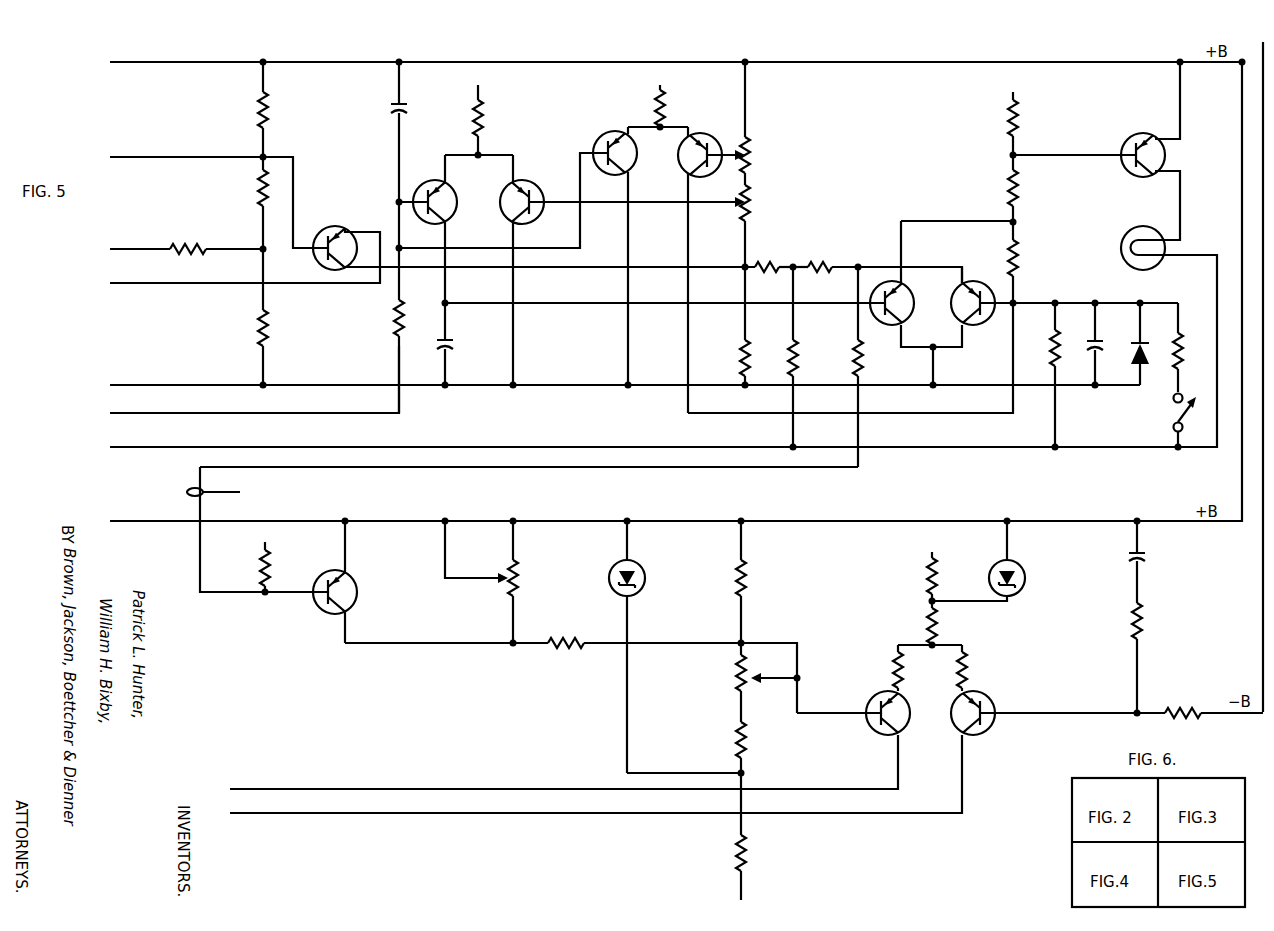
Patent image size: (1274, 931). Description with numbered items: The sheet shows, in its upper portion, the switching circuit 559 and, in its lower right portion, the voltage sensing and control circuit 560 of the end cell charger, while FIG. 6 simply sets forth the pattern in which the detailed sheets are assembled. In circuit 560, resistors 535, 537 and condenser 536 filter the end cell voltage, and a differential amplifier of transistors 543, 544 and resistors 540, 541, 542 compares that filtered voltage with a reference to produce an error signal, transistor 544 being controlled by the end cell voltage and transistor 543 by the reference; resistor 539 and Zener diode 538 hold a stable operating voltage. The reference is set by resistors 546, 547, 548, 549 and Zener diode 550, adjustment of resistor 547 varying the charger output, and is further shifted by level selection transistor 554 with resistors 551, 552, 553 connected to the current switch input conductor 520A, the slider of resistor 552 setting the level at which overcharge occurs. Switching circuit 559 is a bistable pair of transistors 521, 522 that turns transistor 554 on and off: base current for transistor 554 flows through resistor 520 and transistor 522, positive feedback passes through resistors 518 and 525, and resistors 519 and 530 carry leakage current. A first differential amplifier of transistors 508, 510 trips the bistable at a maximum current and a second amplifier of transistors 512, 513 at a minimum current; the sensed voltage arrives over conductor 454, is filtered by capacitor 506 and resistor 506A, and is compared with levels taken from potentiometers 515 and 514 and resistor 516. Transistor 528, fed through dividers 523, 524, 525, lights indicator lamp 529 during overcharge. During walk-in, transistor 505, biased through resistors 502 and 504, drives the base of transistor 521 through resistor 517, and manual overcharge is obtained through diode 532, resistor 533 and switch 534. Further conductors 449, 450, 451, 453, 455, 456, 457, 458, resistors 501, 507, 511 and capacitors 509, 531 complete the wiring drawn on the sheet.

The conductor 449 is at (678, 54).
The conductor 450 is at (211, 193).
The conductor 451 is at (188, 242).
The conductor 453 is at (625, 377).
The conductor 454 is at (561, 358).
The conductor 455 is at (663, 353).
The conductor 456 is at (676, 293).
The conductor 457 is at (564, 762).
The conductor 458 is at (596, 774).
The resistor 501 is at (241, 109).
The resistor 502 is at (241, 203).
The resistor 504 is at (241, 317).
The transistor 505 is at (432, 245).
The capacitor 506 is at (378, 181).
The resistor 506A is at (371, 356).
The resistor 507 is at (487, 112).
The transistor 508 is at (456, 247).
The capacitor 509 is at (435, 343).
The transistor 510 is at (617, 270).
The resistor 511 is at (668, 98).
The transistor 512 is at (543, 252).
The transistor 513 is at (706, 263).
The potentiometer 514 is at (762, 123).
The potentiometer 515 is at (762, 262).
The resistor 516 is at (729, 325).
The resistor 517 is at (780, 255).
The resistor 518 is at (885, 261).
The resistor 519 is at (781, 357).
The resistor 520 is at (842, 367).
The current switch input conductor 520A is at (522, 531).
The transistor 521 is at (729, 303).
The transistor 522 is at (1064, 307).
The resistor 523 is at (1019, 122).
The resistor 524 is at (1031, 205).
The resistor 525 is at (1031, 271).
The transistor 528 is at (1096, 151).
The indicator lamp 529 is at (1147, 248).
The resistor 530 is at (1038, 375).
The capacitor 531 is at (1087, 344).
The diode 532 is at (1128, 344).
The resistor 533 is at (1194, 347).
The switch 534 is at (1162, 421).
The resistor 535 is at (1200, 725).
The condenser 536 is at (1150, 562).
The resistor 537 is at (1156, 660).
The Zener diode 538 is at (998, 561).
The resistor 539 is at (943, 571).
The resistor 540 is at (936, 628).
The resistor 541 is at (876, 668).
The resistor 542 is at (982, 668).
The transistor 543 is at (825, 699).
The transistor 544 is at (1044, 723).
The resistor 546 is at (760, 588).
The resistor 547 is at (745, 688).
The resistor 548 is at (686, 778).
The resistor 549 is at (726, 879).
The Zener diode 550 is at (641, 647).
The resistor 551 is at (543, 655).
The resistor 552 is at (498, 582).
The resistor 553 is at (251, 558).
The level selection transistor 554 is at (326, 582).
The switching circuit 559 is at (633, 52).
The voltage sensing and control circuit 560 is at (460, 877).